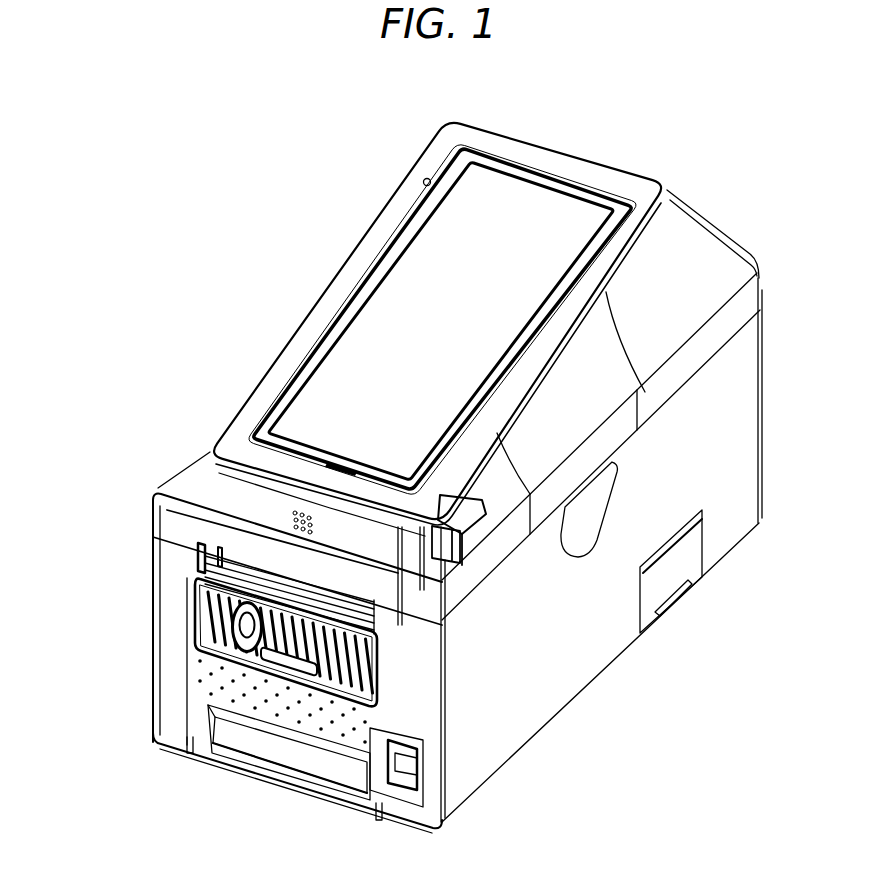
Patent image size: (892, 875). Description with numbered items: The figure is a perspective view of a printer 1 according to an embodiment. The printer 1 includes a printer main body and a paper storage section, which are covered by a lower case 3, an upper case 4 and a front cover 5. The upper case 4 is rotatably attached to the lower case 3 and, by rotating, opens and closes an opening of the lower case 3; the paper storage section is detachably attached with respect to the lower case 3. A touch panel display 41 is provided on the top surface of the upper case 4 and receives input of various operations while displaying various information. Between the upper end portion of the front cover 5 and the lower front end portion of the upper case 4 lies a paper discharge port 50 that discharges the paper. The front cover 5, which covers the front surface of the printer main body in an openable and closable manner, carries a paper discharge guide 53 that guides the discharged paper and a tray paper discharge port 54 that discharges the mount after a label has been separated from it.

The printer 1 is at (705, 104).
The lower case 3 is at (733, 434).
The upper case 4 is at (697, 262).
The touch panel display 41 is at (417, 283).
The front cover 5 is at (172, 617).
The paper discharge port 50 is at (215, 579).
The paper discharge guide 53 is at (205, 632).
The tray paper discharge port 54 is at (273, 740).